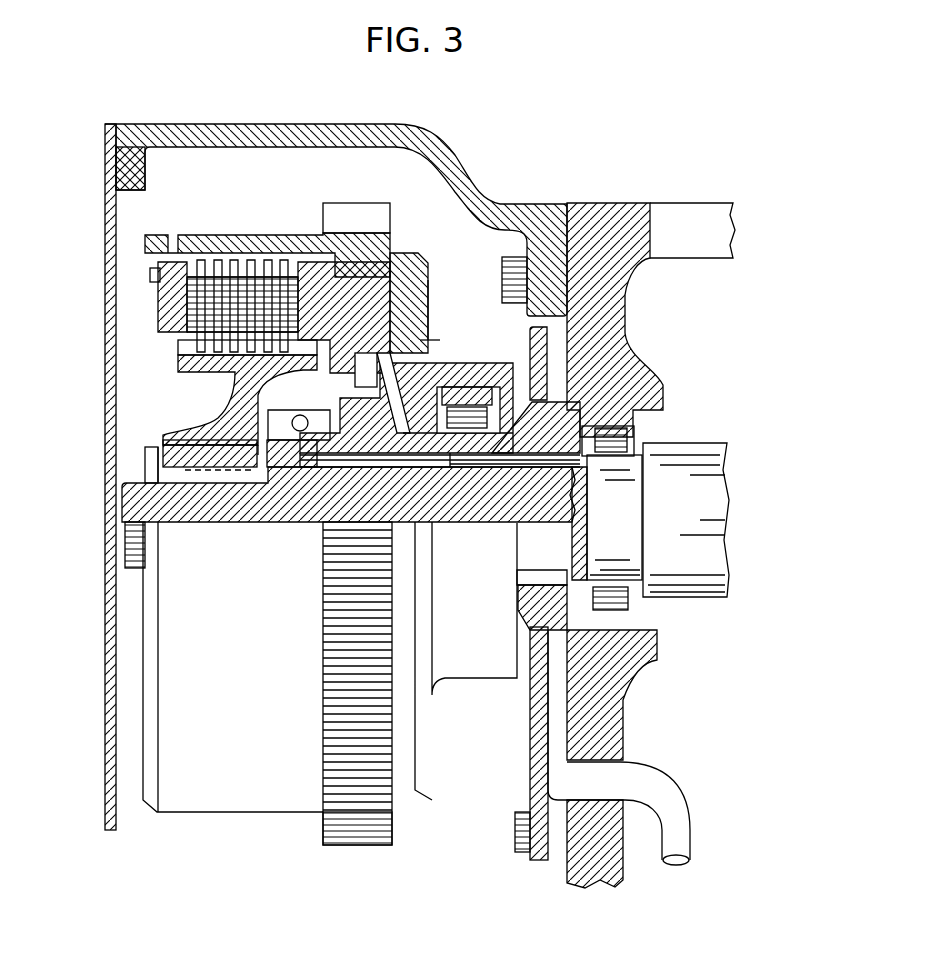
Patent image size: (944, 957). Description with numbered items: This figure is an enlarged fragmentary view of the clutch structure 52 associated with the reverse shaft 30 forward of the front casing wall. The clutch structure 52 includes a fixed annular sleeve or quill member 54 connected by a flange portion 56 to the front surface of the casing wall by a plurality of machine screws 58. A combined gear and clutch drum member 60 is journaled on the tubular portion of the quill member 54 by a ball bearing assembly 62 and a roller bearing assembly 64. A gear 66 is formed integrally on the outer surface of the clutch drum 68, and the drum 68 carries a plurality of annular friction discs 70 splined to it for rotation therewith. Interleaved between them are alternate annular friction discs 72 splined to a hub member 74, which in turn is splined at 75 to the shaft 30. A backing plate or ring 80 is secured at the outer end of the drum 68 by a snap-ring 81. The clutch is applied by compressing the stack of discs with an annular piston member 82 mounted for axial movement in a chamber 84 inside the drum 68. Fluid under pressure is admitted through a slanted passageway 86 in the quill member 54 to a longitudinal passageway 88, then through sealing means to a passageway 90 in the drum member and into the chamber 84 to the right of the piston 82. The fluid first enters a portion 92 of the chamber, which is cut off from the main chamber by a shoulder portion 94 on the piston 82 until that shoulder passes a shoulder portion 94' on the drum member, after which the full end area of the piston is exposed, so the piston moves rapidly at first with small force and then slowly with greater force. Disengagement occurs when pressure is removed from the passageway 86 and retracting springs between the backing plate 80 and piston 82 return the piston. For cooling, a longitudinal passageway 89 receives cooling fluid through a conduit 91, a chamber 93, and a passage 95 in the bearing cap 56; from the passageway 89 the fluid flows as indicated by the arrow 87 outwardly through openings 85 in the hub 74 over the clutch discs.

The reverse shaft 30 is at (130, 500).
The clutch structure 52 is at (240, 195).
The fixed annular sleeve or quill member 54 is at (320, 455).
The flange portion 56 is at (543, 362).
The machine screws 58 is at (515, 837).
The combined gear and clutch drum member 60 is at (240, 795).
The ball bearing assembly 62 is at (270, 455).
The roller bearing assembly 64 is at (468, 418).
The gear 66 is at (348, 210).
The clutch drum 68 is at (258, 238).
The annular friction discs 70 is at (248, 262).
The alternate annular friction discs 72 is at (205, 358).
The hub member 74 is at (215, 380).
The splines 75 is at (215, 473).
The backing plate or ring 80 is at (168, 313).
The snap-ring 81 is at (160, 272).
The annular piston member 82 is at (368, 290).
The chamber 84 is at (428, 268).
The openings 85 is at (225, 393).
The slanted passageway 86 is at (594, 385).
The arrow 87 is at (223, 428).
The longitudinal passageway 88 is at (449, 462).
The longitudinal passageway 89 is at (520, 464).
The passageway 90 is at (440, 357).
The conduit 91 is at (660, 793).
The portion of the chamber 92 is at (362, 365).
The chamber 93 is at (555, 665).
The shoulder portion 94 is at (445, 310).
The shoulder portion 94' is at (446, 327).
The passage 95 is at (545, 608).